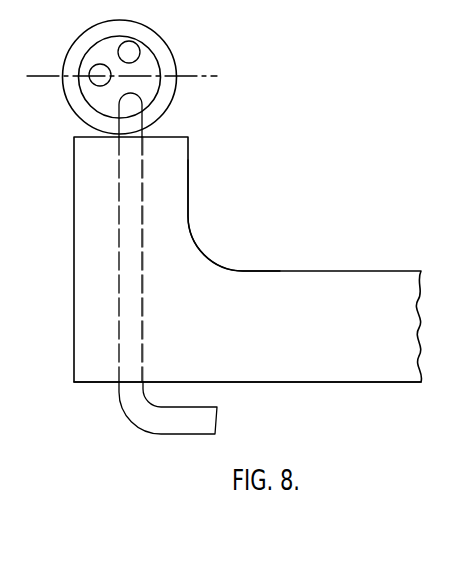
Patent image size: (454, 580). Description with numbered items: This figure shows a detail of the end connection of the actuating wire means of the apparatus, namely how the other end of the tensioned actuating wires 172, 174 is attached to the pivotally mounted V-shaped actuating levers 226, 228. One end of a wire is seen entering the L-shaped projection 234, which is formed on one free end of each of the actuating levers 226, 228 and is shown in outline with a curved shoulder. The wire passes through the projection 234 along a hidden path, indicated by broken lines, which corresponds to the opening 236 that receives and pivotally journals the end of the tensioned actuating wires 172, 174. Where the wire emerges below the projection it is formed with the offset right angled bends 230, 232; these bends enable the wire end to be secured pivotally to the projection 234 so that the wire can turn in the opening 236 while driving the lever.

The tensioned actuating wire 172 is at (112, 108).
The tensioned actuating wire 174 is at (84, 102).
The offset right angled bend 230 is at (130, 118).
The L-shaped projection 234 is at (172, 226).
The opening 236 is at (143, 288).
The V-shaped actuating lever 226 is at (384, 352).
The V-shaped actuating lever 228 is at (247, 355).
The offset right angled bend 232 is at (140, 407).